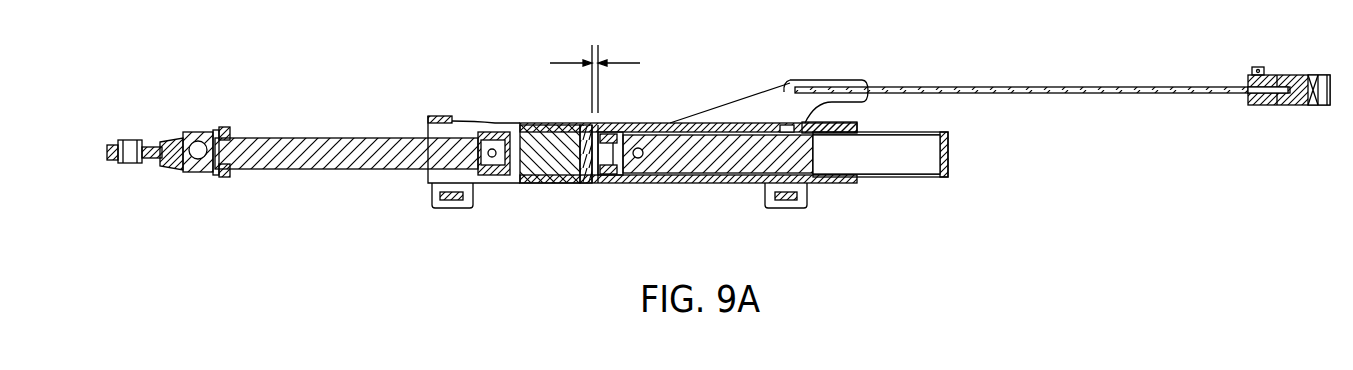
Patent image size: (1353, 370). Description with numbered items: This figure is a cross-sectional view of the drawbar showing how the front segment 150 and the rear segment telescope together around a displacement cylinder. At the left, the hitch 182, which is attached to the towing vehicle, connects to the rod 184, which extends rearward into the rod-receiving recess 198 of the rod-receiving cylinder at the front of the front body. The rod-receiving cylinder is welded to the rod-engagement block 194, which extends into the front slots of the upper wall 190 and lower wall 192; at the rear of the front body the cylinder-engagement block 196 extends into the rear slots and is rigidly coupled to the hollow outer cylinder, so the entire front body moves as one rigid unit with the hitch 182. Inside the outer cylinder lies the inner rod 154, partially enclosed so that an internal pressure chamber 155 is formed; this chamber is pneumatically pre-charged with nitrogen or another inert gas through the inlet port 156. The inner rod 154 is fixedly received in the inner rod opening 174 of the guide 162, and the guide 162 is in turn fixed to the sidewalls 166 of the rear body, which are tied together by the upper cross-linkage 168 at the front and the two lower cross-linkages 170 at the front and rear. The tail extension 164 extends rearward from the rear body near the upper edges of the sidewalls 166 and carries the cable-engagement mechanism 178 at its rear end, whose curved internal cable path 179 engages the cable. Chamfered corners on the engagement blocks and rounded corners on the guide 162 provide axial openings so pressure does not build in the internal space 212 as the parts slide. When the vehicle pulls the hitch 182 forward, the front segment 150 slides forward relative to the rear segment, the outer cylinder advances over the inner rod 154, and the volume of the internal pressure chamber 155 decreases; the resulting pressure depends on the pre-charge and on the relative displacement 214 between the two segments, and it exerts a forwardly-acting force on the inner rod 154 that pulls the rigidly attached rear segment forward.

The front segment 150 is at (349, 189).
The inner rod 154 is at (705, 140).
The internal pressure chamber 155 is at (887, 160).
The inlet port 156 is at (950, 152).
The guide 162 is at (610, 130).
The tail extension 164 is at (1080, 86).
The sidewalls 166 is at (732, 113).
The upper cross-linkage 168 is at (443, 118).
The lower cross-linkages 170 is at (450, 199).
The inner rod opening 174 is at (615, 165).
The cable-engagement mechanism 178 is at (1305, 75).
The curved internal cable path 179 is at (1297, 105).
The hitch 182 is at (124, 165).
The rod 184 is at (326, 146).
The upper wall 190 is at (823, 127).
The lower wall 192 is at (690, 178).
The rod-engagement block 194 is at (588, 178).
The cylinder-engagement block 196 is at (790, 128).
The rod-receiving recess 198 is at (497, 130).
The internal space 212 is at (594, 168).
The relative displacement 214 is at (565, 60).